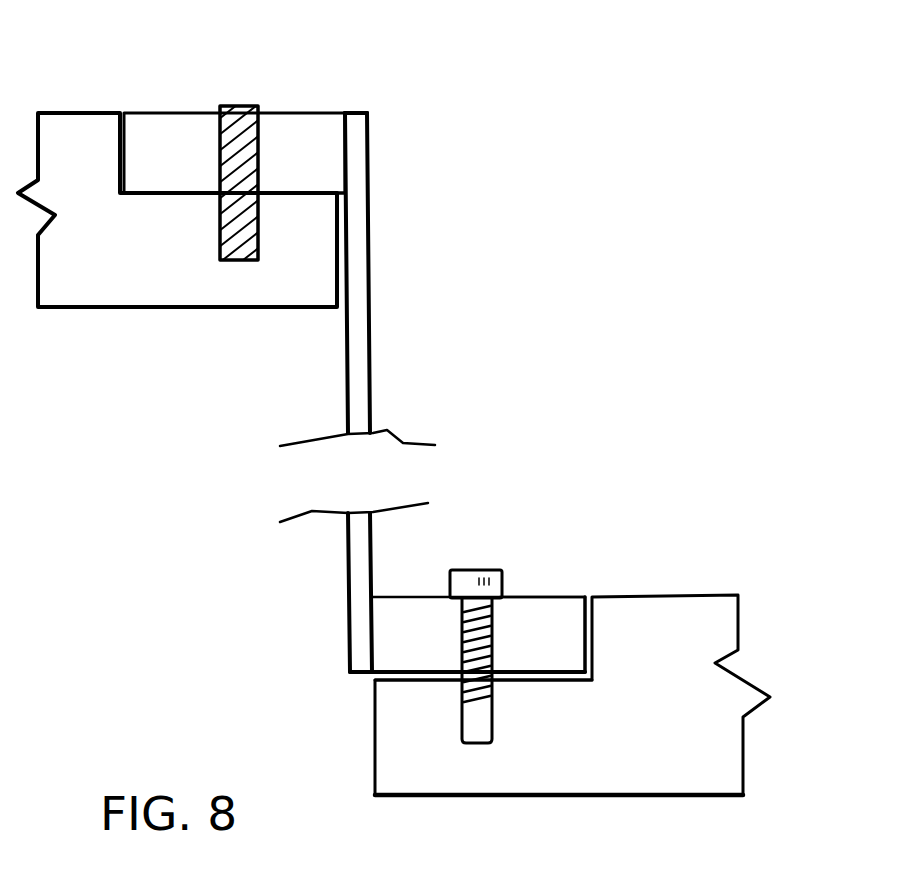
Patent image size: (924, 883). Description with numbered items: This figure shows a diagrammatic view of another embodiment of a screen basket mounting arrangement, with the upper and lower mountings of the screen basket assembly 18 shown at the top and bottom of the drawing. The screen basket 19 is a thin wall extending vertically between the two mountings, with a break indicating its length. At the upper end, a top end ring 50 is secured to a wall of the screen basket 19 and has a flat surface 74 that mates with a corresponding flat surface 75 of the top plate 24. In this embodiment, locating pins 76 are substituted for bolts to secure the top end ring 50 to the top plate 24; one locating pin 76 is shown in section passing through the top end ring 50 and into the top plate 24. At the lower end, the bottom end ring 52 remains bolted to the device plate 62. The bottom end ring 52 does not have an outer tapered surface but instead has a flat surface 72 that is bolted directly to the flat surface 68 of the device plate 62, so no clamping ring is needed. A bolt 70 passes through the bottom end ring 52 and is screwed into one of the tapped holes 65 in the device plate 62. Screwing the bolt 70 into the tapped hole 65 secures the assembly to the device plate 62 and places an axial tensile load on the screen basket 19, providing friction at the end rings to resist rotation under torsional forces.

The screen basket assembly 18 is at (409, 88).
The screen basket 19 is at (372, 156).
The top plate 24 is at (75, 110).
The top end ring 50 is at (286, 111).
The bottom end ring 52 is at (530, 595).
The device plate 62 is at (750, 662).
The tapped holes 65 is at (447, 722).
The flat surface 68 is at (504, 706).
The bolt 70 is at (463, 569).
The flat surface 72 is at (567, 595).
The flat surface 74 is at (317, 112).
The flat surface 75 is at (315, 196).
The locating pin 76 is at (222, 104).